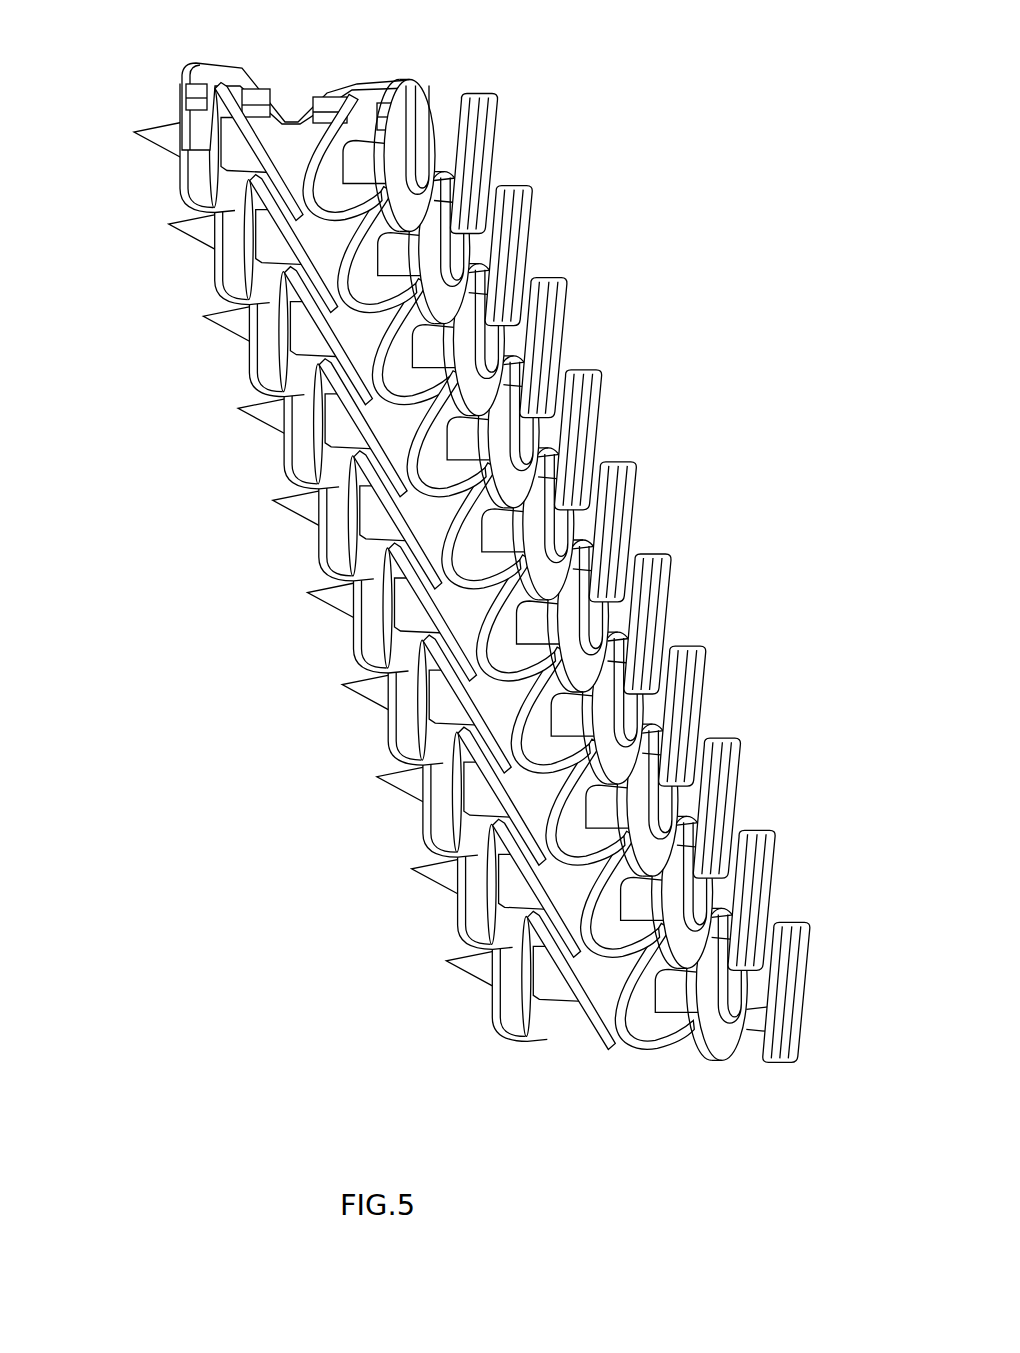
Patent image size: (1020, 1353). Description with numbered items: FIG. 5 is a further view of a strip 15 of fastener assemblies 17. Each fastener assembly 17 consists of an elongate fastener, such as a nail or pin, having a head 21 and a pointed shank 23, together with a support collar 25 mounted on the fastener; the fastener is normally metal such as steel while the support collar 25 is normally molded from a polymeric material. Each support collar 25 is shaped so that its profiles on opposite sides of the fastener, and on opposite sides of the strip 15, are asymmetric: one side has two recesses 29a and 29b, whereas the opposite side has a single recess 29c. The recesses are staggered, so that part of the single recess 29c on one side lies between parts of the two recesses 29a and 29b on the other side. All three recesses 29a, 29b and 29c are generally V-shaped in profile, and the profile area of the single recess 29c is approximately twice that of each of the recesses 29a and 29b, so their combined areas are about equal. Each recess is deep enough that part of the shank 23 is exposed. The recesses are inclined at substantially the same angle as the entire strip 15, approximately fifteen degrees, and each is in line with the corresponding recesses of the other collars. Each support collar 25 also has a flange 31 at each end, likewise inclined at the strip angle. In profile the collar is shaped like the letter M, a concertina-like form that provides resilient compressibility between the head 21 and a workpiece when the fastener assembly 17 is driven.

The strip 15 is at (458, 599).
The fastener assembly 17 is at (814, 923).
The head 21 is at (690, 680).
The pointed shank 23 is at (237, 147).
The support collar 25 is at (610, 982).
The recess 29a is at (578, 1074).
The recess 29b is at (687, 1074).
The single recess 29c is at (321, 80).
The flange 31 is at (310, 137).